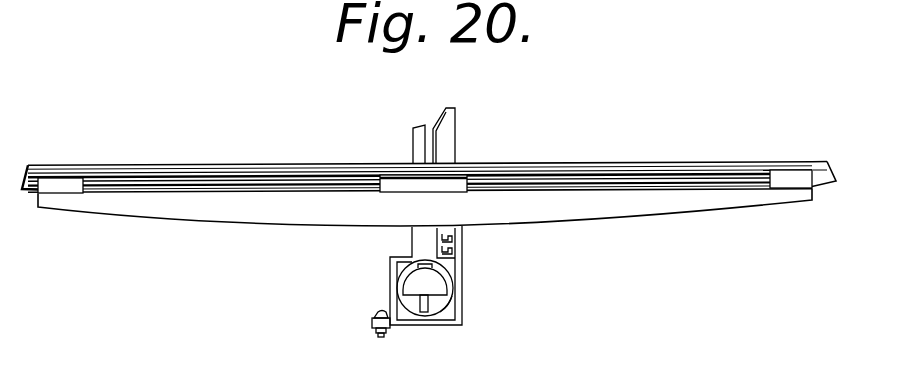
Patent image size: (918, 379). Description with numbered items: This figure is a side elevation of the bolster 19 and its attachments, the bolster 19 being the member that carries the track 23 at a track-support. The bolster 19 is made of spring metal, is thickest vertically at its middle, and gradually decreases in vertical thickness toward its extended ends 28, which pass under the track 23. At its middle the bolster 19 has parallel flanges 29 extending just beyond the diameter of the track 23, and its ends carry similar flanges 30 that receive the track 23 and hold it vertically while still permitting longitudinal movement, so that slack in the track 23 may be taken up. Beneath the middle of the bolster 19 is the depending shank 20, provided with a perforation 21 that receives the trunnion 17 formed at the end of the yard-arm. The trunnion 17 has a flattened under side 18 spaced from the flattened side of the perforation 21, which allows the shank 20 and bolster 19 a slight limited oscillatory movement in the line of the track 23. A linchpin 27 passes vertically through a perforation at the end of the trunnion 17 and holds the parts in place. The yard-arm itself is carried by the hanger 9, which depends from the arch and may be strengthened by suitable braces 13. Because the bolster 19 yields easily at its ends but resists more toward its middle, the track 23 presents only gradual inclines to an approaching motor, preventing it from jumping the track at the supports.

The track 23 is at (240, 175).
The flanges 30 is at (57, 187).
The extended ends 28 is at (243, 207).
The hanger 9 is at (413, 140).
The braces 13 is at (444, 130).
The clip 29 is at (441, 187).
The bolster 19 is at (408, 222).
The depending shank 20 is at (426, 243).
The perforation 21 is at (449, 283).
The trunnion 17 is at (410, 284).
The flattened under side 18 is at (439, 297).
The linchpin 27 is at (424, 312).